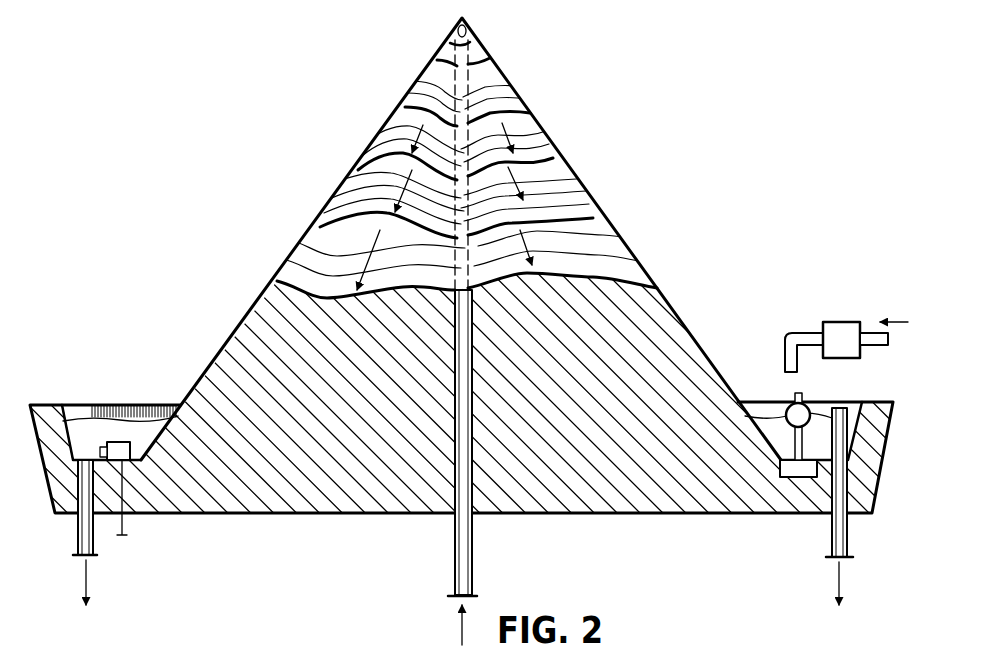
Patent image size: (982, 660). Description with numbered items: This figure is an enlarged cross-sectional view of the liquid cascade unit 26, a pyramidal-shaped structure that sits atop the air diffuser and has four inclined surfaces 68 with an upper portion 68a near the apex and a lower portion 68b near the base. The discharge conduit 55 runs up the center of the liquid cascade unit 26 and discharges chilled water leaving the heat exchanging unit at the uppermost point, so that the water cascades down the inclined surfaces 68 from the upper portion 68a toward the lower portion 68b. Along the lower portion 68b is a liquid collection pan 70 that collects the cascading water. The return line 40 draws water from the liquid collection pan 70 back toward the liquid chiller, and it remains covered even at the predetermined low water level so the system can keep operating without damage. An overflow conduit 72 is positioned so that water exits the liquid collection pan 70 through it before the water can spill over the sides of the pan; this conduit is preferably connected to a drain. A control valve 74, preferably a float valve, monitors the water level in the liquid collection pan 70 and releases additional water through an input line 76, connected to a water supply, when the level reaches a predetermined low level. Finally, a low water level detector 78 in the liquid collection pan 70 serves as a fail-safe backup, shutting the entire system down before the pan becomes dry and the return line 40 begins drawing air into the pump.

The liquid cascade unit 26 is at (624, 178).
The inclined surfaces 68 is at (318, 224).
The upper portion 68a is at (470, 26).
The lower portion 68b is at (729, 392).
The liquid collection pan 70 is at (80, 410).
The low water level detector 78 is at (125, 442).
The return line 40 is at (78, 542).
The discharge conduit 55 is at (455, 562).
The overflow conduit 72 is at (848, 534).
The control valve 74 is at (806, 409).
The input line 76 is at (797, 333).